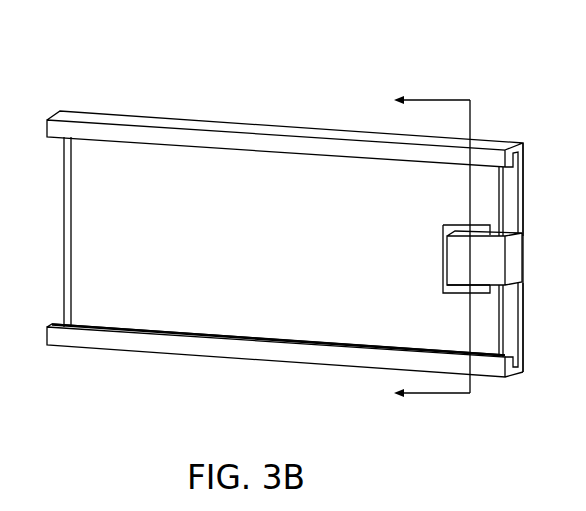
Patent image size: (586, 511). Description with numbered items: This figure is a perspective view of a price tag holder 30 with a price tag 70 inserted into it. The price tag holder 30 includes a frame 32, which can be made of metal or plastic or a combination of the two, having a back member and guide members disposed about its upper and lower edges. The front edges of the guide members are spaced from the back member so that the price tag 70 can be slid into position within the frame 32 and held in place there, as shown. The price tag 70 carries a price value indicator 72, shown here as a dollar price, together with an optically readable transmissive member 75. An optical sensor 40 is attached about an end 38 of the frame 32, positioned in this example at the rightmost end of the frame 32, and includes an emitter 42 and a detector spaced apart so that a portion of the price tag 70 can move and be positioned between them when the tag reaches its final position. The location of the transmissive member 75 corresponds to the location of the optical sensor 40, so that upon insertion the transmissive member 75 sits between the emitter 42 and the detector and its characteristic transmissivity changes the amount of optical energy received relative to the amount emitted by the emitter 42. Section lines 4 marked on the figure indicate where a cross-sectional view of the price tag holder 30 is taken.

The price tag holder 30 is at (303, 70).
The price value indicator 72 is at (153, 162).
The price tag 70 is at (503, 202).
The frame 32 is at (525, 213).
The end of frame 38 is at (523, 321).
The transmissive member 75 is at (452, 223).
The emitter 42 is at (458, 292).
The optical sensor 40 is at (523, 258).
The section lines 4- 4 is at (425, 246).